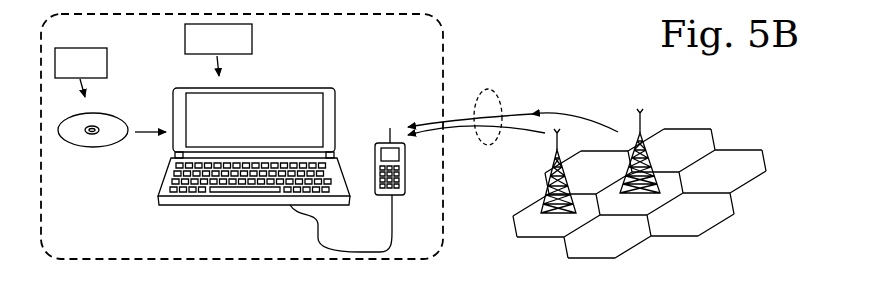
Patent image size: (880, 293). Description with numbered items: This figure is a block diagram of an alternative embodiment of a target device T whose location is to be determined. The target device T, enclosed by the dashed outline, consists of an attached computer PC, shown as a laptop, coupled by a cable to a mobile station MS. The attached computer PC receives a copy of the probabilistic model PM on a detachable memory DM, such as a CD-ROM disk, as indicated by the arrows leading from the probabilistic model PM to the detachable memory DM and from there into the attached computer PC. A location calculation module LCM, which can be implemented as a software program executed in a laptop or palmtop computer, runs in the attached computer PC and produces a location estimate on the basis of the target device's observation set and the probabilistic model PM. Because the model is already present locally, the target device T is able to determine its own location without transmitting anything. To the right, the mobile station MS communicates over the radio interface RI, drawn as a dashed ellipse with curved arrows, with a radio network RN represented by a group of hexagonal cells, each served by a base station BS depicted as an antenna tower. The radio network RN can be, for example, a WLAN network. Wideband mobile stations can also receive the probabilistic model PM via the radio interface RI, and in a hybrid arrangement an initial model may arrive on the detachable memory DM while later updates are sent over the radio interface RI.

The target device T is at (445, 53).
The probabilistic model PM is at (81, 72).
The detachable memory DM is at (105, 112).
The location calculation module LCM is at (218, 50).
The attached computer PC is at (337, 90).
The mobile station MS is at (384, 142).
The radio interface RI is at (492, 88).
The base station BS is at (600, 172).
The radio network RN is at (712, 233).